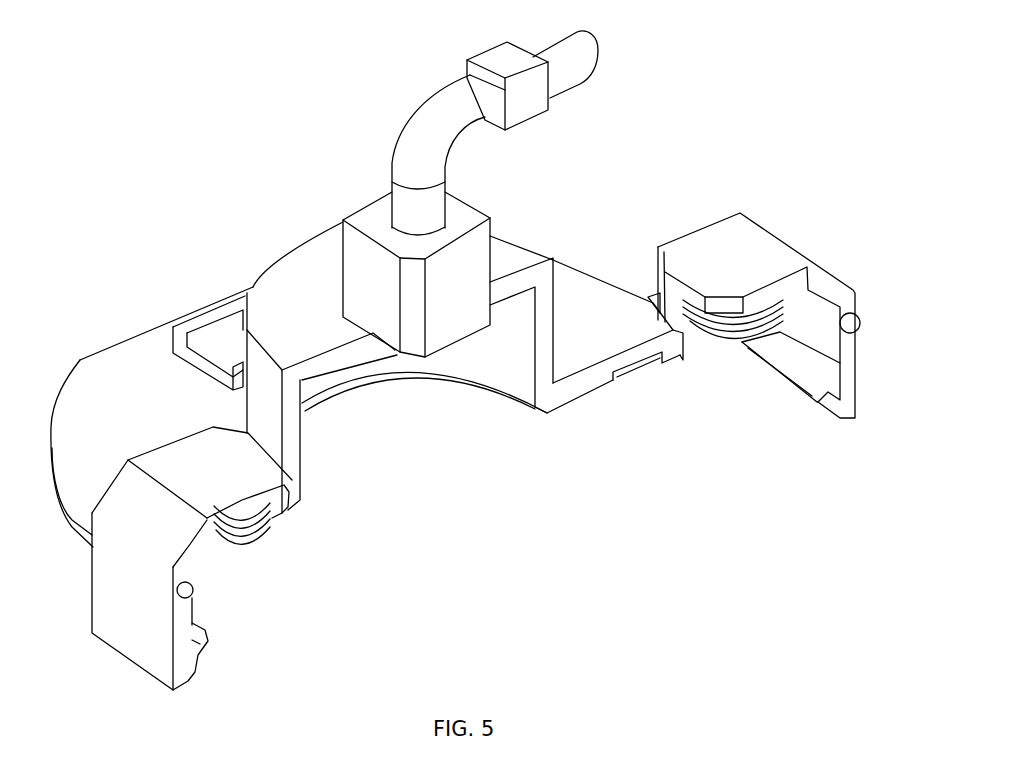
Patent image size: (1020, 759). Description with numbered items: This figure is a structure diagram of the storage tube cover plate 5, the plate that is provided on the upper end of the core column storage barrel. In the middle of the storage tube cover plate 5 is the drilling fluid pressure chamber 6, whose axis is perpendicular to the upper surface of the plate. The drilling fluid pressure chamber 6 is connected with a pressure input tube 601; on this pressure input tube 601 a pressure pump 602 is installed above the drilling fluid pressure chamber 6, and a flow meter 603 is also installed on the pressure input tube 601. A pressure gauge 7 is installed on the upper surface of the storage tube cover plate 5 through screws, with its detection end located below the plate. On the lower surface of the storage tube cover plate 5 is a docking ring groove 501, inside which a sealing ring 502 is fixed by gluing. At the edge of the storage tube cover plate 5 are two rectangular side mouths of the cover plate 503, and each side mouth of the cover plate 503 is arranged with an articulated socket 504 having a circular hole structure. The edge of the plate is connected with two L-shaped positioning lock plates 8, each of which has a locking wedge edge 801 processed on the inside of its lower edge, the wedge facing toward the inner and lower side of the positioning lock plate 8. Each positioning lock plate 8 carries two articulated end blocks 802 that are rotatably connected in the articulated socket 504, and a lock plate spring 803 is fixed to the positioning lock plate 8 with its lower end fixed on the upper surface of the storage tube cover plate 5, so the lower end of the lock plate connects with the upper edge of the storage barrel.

The storage tube cover plate 5 is at (172, 380).
The drilling fluid pressure chamber 6 is at (310, 318).
The pressure gauge 7 is at (230, 342).
The positioning lock plate 8 is at (167, 522).
The locking wedge edge 801 is at (207, 637).
The articulated end block 802 is at (173, 607).
The lock plate spring 803 is at (262, 537).
The docking ring groove 501 is at (613, 377).
The sealing ring 502 is at (637, 365).
The side mouth of the cover plate 503 is at (680, 335).
The articulated socket 504 is at (658, 247).
The pressure input tube 601 is at (425, 158).
The pressure pump 602 is at (365, 258).
The flow meter 603 is at (520, 103).